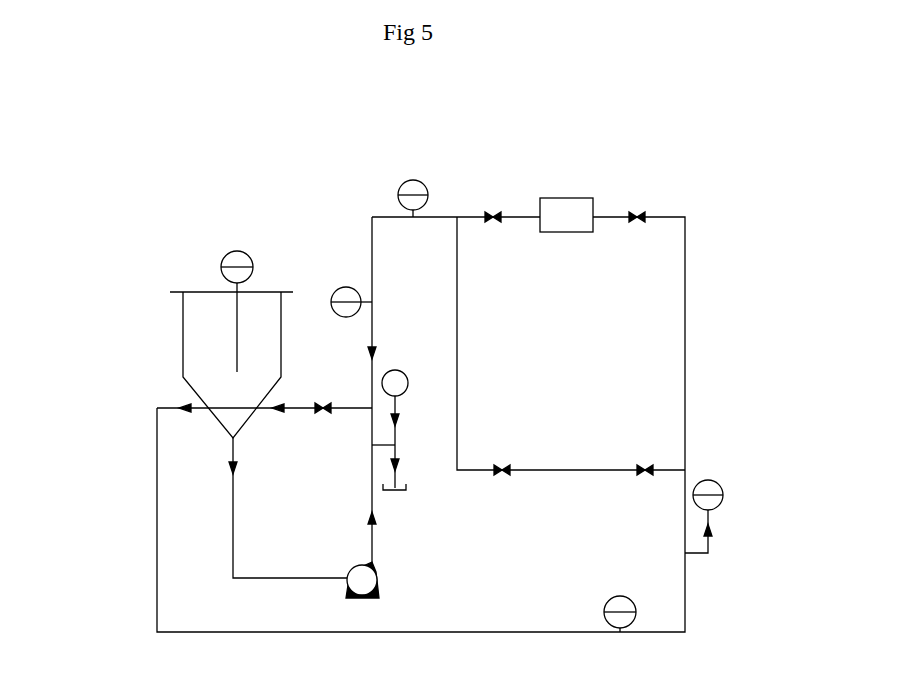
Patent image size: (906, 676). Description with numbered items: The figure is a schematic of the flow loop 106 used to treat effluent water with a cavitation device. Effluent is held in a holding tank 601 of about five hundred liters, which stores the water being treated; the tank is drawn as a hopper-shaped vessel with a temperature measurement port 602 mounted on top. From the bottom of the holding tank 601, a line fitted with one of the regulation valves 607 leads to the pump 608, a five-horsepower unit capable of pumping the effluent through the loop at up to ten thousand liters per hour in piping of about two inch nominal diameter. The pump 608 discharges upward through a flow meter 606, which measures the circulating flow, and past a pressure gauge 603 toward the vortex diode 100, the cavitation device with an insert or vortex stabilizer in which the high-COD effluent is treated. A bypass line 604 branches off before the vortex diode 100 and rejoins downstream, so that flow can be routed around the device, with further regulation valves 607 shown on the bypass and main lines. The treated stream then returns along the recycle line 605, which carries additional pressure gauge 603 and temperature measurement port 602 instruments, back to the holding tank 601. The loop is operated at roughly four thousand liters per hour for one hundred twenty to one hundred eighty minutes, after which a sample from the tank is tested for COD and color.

The flow loop 106 is at (133, 213).
The vortex diode 100 is at (592, 200).
The holding tank 601 is at (183, 340).
The temperature measurement port 602 is at (257, 270).
The pressure gauge 603 is at (428, 193).
The bypass line 604 is at (460, 432).
The recycle line 605 is at (152, 480).
The flow meter 606 is at (345, 318).
The regulation valves 607 is at (235, 472).
The pump 608 is at (385, 578).